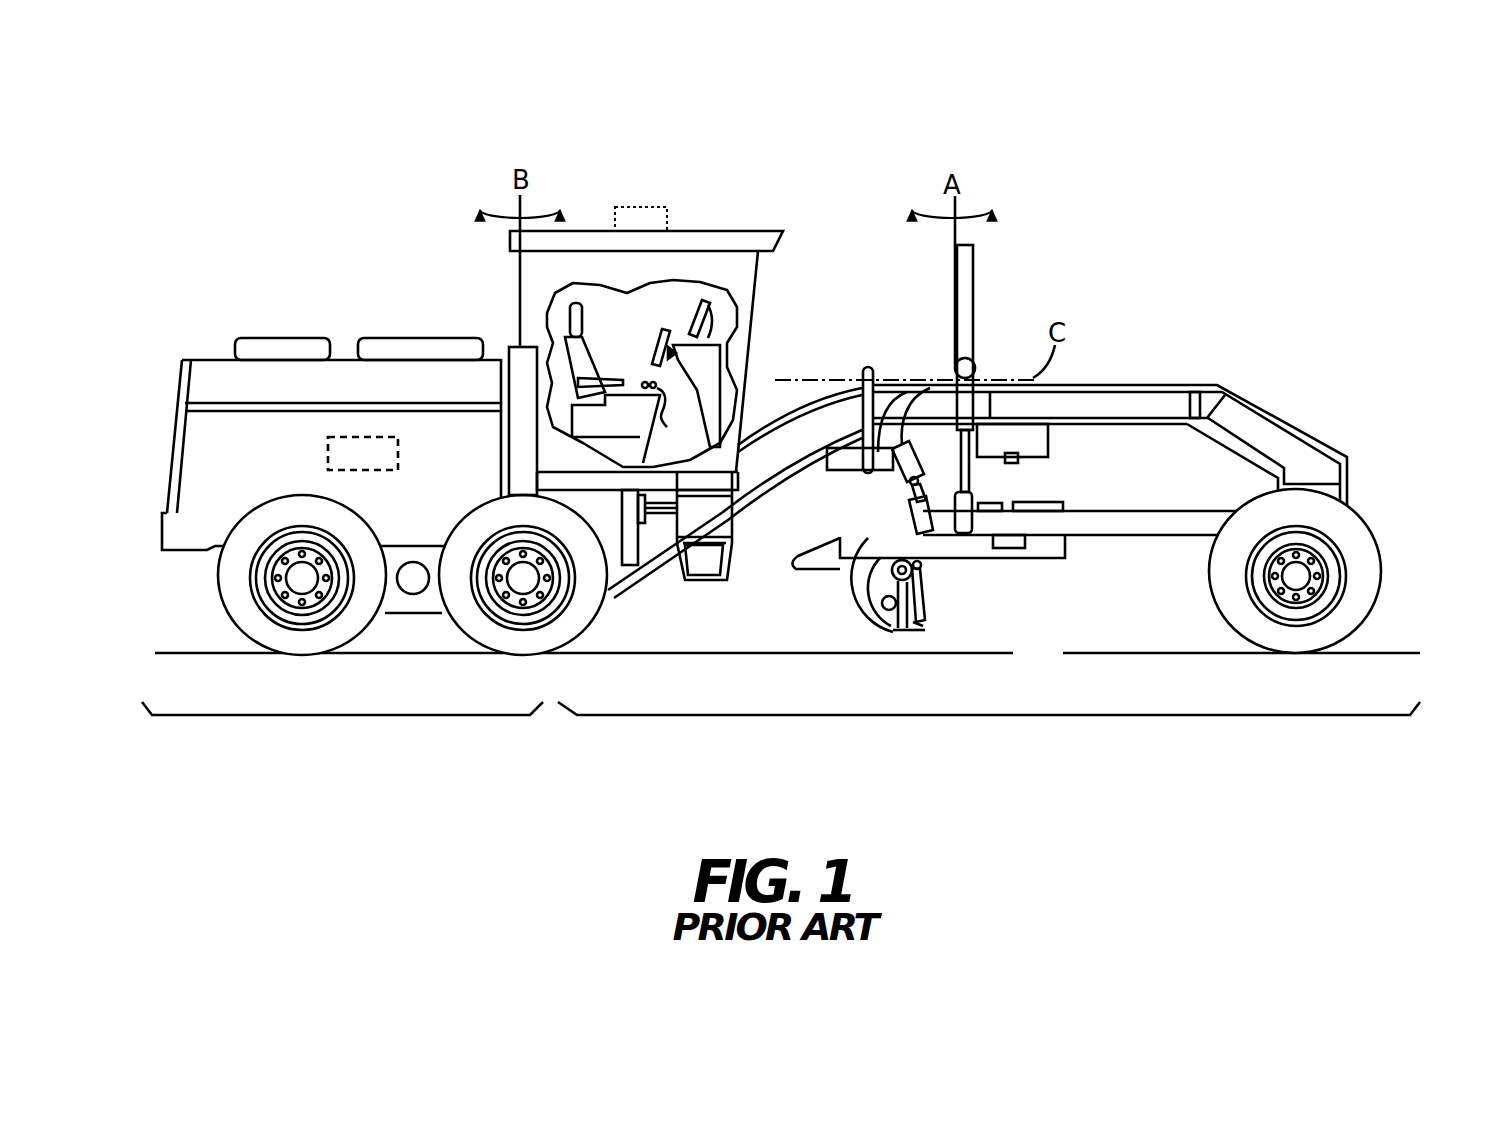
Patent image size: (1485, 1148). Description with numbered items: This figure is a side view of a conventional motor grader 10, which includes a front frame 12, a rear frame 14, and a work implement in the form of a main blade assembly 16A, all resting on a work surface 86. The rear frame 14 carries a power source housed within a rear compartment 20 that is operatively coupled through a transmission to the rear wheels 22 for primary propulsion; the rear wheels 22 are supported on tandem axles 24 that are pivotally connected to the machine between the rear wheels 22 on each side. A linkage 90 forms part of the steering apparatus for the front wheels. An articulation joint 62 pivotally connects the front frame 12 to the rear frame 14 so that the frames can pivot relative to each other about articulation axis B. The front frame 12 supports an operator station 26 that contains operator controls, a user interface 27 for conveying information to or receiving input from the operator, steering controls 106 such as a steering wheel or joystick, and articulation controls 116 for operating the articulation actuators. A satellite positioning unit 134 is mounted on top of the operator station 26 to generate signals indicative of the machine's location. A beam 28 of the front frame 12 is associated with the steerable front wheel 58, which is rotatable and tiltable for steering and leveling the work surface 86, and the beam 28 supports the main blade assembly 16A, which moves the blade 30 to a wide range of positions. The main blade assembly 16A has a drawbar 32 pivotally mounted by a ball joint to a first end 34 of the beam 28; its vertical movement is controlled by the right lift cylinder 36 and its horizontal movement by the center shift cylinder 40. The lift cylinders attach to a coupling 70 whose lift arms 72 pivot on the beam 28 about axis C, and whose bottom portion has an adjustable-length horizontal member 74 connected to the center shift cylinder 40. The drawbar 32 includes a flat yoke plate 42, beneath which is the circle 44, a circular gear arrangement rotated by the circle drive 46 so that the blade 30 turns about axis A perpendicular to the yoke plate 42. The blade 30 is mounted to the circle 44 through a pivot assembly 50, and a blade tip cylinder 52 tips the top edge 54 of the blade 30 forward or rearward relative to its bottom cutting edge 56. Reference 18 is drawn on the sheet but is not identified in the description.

The motor grader 10 is at (1250, 119).
The front frame 12 is at (1000, 720).
The rear frame 14 is at (343, 720).
The main blade assembly 16A is at (1013, 590).
The drawbar 18 is at (1030, 579).
The rear compartment 20 is at (207, 442).
The rear wheels 22 is at (219, 587).
The tandem axles 24 is at (400, 603).
The operator station 26 is at (755, 277).
The user interface 27 is at (704, 300).
The beam 28 is at (1157, 406).
The blade 30 is at (927, 623).
The drawbar 32 is at (1190, 538).
The first end 34 is at (1238, 500).
The right lift cylinder 36 is at (975, 288).
The center shift cylinder 40 is at (898, 477).
The yoke plate 42 is at (843, 536).
The circle 44 is at (1027, 558).
The circle drive 46 is at (1060, 497).
The pivot assembly 50 is at (881, 620).
The blade tip cylinder 52 is at (834, 570).
The top edge 54 is at (927, 590).
The bottom cutting edge 56 is at (918, 632).
The right wheel 58 is at (1352, 548).
The articulation joint 62 is at (502, 322).
The coupling 70 is at (856, 363).
The lift arms 72 is at (907, 372).
The horizontal member 74 is at (853, 478).
The work surface 86 is at (1398, 651).
The linkage 90 is at (380, 472).
The steering controls 106 is at (657, 343).
The articulation controls 116 is at (678, 421).
The satellite positioning unit 134 is at (645, 206).